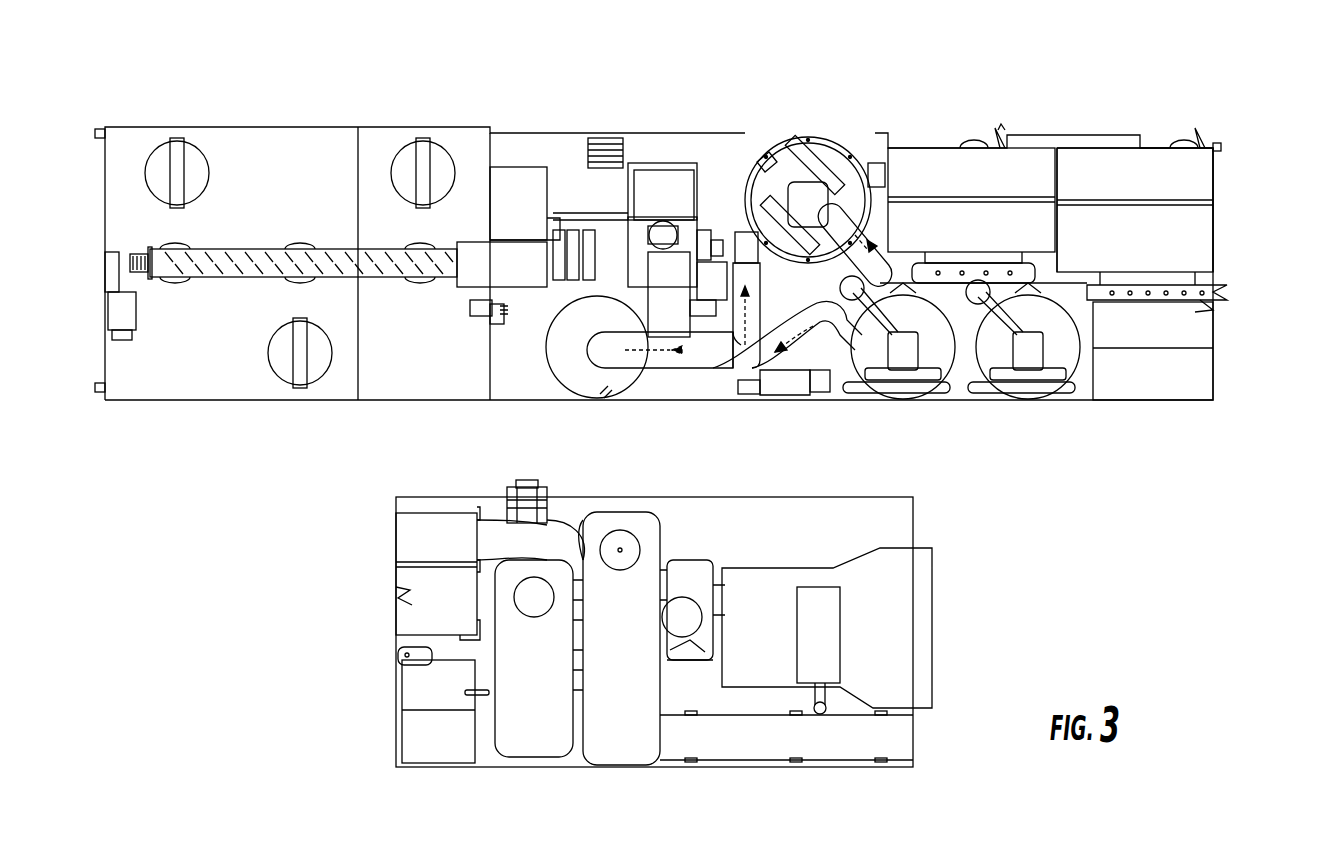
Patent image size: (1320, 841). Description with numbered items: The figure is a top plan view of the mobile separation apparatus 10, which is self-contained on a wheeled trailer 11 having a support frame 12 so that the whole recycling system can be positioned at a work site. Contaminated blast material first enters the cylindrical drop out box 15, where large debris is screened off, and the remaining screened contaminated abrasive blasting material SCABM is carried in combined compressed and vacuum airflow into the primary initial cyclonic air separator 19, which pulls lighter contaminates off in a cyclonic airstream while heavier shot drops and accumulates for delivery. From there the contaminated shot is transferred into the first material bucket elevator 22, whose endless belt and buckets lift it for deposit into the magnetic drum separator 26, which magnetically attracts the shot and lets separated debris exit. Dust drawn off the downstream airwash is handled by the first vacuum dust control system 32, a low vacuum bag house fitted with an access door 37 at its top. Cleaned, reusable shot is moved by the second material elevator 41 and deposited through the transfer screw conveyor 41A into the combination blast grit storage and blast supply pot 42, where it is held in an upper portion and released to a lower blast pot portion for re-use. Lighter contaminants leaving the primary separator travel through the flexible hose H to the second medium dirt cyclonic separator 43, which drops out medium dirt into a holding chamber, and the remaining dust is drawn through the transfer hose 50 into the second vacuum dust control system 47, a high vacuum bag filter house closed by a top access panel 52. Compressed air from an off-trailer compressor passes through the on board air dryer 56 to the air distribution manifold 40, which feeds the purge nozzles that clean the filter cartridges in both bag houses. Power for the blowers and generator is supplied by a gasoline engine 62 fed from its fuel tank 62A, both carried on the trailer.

The mobile separation apparatus 10 is at (702, 394).
The wheeled trailer 11 is at (704, 620).
The support frame 12 is at (512, 383).
The cylindrical drop out box 15 is at (803, 368).
The primary initial cyclonic air separator 19 is at (584, 388).
The first material bucket elevator 22 is at (700, 225).
The magnetic drum separator 26 is at (648, 210).
The first vacuum dust control system 32 is at (1010, 150).
The access door 37 is at (930, 150).
The air distribution manifold 40 is at (1200, 285).
The second material elevator 41 is at (527, 252).
The transfer screw conveyor 41A is at (262, 268).
The combination blast grit storage and blast supply pot 42 is at (285, 152).
The second medium dirt cyclonic separator 43 is at (835, 165).
The second vacuum dust control system 47 is at (1090, 152).
The transfer hose 50 is at (828, 220).
The top access panel 52 is at (1200, 178).
The on board air dryer 56 is at (878, 348).
The gasoline engine 62 is at (905, 578).
The fuel tank 62A is at (902, 730).
The flexible hose H is at (720, 358).
The screened contaminated abrasive blasting material SCABM is at (775, 372).